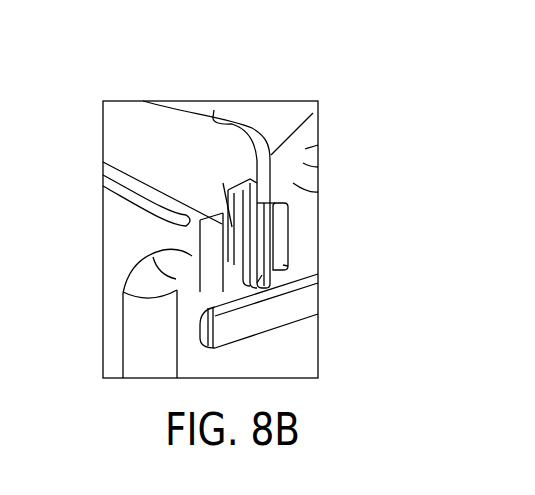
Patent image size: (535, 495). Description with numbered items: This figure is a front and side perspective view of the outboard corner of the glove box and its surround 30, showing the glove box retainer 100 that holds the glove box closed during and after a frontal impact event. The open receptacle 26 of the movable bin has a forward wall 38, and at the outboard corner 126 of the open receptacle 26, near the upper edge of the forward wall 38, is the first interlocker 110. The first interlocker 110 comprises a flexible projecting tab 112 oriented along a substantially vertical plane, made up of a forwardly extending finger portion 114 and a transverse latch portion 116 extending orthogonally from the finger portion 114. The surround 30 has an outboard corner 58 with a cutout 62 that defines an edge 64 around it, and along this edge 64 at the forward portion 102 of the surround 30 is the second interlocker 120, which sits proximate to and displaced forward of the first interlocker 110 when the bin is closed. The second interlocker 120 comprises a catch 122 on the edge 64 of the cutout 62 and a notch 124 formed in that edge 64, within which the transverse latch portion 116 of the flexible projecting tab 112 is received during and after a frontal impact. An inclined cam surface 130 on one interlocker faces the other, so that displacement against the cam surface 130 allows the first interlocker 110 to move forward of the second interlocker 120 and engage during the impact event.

The open receptacle 26 is at (115, 299).
The surround 30 is at (318, 167).
The forward wall 38 is at (269, 136).
The outboard corner 58 is at (318, 192).
The cutout 62 is at (271, 140).
The edge 64 is at (214, 110).
The glove box retainer 100 is at (305, 250).
The forward portion 102 is at (318, 145).
The first interlocker 110 is at (227, 222).
The flexible projecting tab 112 is at (208, 250).
The forwardly extending finger portion 114 is at (180, 243).
The transverse latch portion 116 is at (233, 243).
The second interlocker 120 is at (262, 275).
The catch 122 is at (280, 227).
The notch 124 is at (283, 265).
The outboard corner 126 is at (192, 248).
The inclined cam surface 130 is at (240, 210).